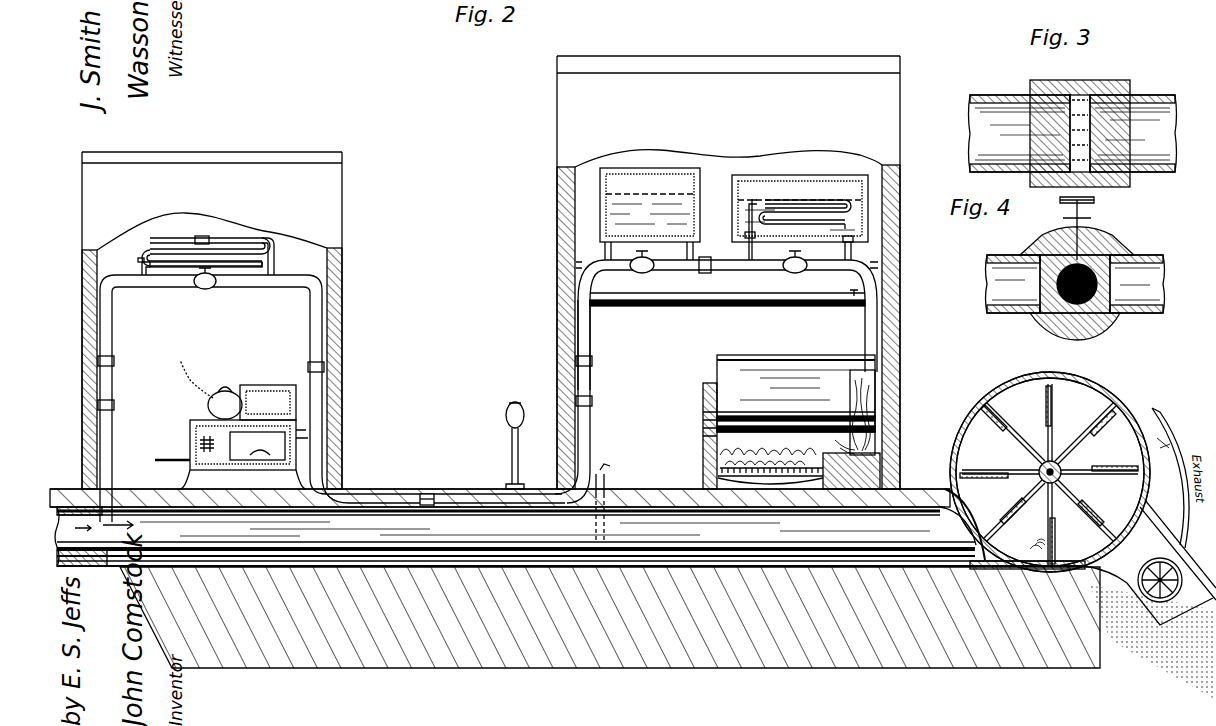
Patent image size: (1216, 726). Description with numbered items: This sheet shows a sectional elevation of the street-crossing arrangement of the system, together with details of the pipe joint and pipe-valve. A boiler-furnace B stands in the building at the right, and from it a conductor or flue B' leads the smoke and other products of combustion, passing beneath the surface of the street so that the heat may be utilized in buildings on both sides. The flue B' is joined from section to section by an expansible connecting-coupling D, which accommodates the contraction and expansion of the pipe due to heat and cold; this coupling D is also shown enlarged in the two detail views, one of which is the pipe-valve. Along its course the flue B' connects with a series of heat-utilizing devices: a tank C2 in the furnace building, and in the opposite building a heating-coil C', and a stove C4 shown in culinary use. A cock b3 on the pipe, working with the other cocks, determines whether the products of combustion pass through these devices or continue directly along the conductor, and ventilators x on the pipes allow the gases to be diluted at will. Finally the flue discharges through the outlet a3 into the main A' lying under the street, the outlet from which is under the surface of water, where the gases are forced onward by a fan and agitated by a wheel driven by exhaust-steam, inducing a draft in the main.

In FIG. 2, the auxiliary main or house-drain A' is at (570, 529).
In FIG. 2, the outlet into the main a3 is at (104, 516).
In FIG. 2, the furnace B is at (791, 422).
In FIG. 2, the conductor or flue B' is at (488, 400).
In FIG. 2, the heating-coil C' is at (206, 245).
In FIG. 2, the tank C2 is at (734, 205).
In FIG. 2, the stove C4 is at (231, 424).
In FIG. 2, the expansible connecting-coupling D is at (428, 488).
In FIG. 3, the expansible connecting-coupling D is at (1080, 82).
In FIG. 4, the expansible connecting-coupling D is at (1118, 253).
In FIG. 2, the cock b3 is at (205, 289).
In FIG. 2, the ventilators x is at (407, 331).